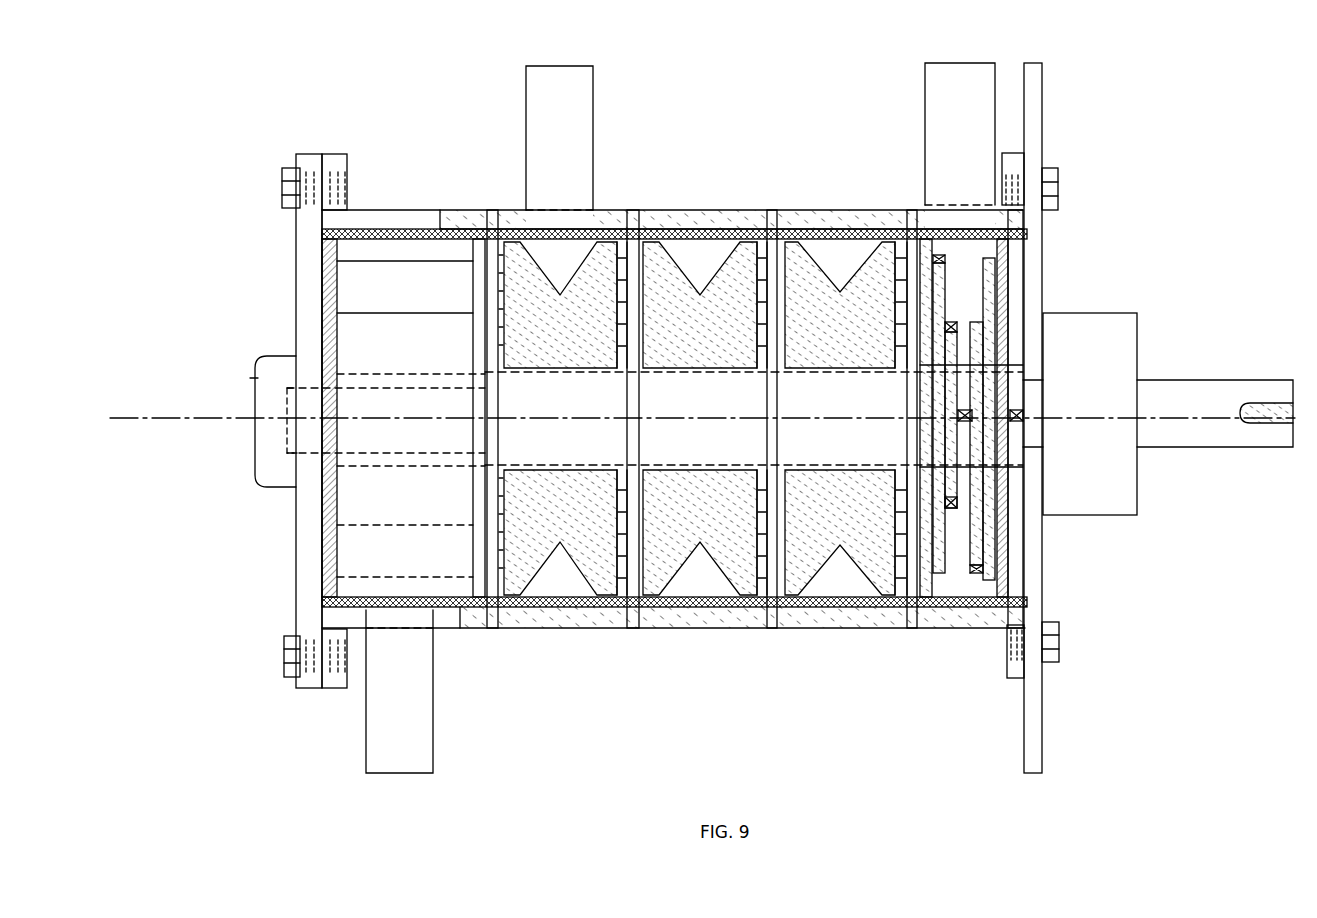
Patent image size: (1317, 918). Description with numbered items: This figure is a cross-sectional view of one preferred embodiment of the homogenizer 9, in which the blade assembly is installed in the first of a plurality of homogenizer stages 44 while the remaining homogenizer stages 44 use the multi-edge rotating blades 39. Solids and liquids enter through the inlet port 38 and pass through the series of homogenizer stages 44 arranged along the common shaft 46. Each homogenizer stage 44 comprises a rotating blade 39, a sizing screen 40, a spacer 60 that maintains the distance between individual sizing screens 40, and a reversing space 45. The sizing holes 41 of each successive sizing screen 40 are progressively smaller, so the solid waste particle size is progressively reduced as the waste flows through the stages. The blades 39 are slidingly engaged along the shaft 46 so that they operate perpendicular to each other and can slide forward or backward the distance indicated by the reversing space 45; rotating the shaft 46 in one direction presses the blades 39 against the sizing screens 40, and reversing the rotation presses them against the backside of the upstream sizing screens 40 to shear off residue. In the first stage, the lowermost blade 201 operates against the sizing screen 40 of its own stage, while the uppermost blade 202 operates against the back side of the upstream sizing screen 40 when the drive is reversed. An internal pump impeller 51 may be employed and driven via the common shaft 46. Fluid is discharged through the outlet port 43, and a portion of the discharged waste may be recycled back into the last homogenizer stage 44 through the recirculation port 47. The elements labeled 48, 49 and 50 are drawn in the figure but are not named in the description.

The homogenizer 9 is at (833, 625).
The inlet port 38 is at (978, 65).
The multi-edge rotating blade 39 is at (520, 580).
The sizing screen 40 is at (488, 230).
The sizing holes 41 is at (770, 253).
The outlet port 43 is at (388, 760).
The homogenizer stage 44 is at (592, 255).
The reversing space 45 is at (623, 580).
The shaft 46 is at (1205, 388).
The recirculation port 47 is at (566, 85).
The end plate 48 is at (1036, 105).
The end cap 49 is at (255, 375).
The bearing housing 50 is at (1115, 330).
The internal pump impeller 51 is at (407, 277).
The spacer 60 is at (570, 597).
The lowermost blade 201 is at (955, 583).
The uppermost blade 202 is at (1010, 470).